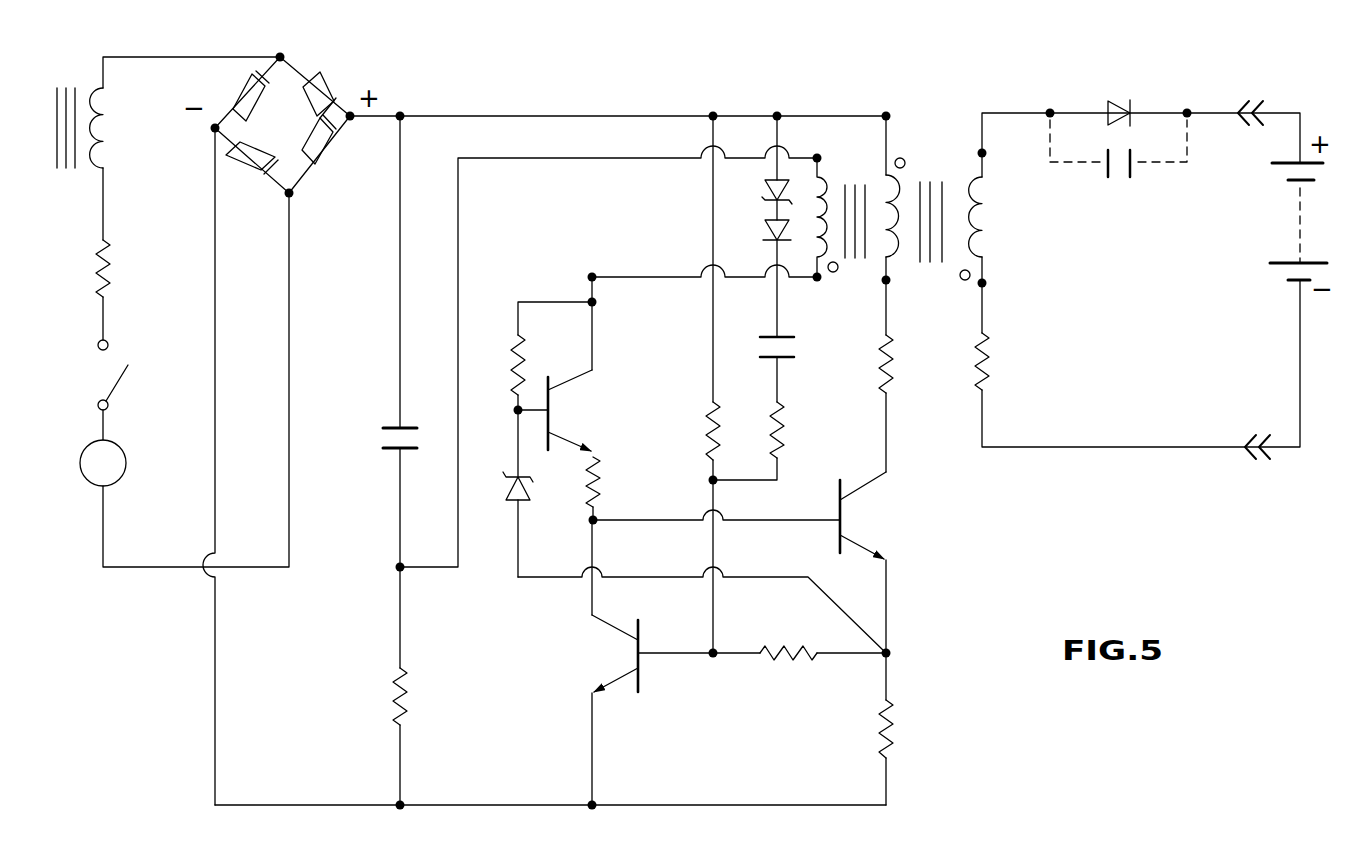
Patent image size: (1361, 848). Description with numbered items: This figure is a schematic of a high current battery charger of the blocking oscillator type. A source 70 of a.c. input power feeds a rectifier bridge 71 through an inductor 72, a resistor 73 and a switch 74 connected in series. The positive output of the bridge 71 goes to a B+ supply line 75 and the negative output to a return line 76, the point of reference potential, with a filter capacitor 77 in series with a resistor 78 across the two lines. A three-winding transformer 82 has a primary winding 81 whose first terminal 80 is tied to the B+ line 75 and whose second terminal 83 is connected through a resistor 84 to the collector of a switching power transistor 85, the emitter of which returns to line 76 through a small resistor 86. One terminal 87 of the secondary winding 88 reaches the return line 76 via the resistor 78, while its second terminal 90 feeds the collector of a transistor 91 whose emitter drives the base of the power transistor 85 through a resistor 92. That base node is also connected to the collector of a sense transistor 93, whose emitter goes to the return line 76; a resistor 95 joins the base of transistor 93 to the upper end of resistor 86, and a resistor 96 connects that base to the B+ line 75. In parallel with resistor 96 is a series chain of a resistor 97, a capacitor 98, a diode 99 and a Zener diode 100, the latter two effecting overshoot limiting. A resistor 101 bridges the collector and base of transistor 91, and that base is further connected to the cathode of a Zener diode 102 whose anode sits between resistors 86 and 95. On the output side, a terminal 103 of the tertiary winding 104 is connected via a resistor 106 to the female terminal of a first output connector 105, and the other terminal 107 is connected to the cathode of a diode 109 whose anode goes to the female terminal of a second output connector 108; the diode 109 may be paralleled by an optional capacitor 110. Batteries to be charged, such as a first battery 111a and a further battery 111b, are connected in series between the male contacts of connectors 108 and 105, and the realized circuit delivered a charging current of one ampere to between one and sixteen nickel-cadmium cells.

The source of input power 70 is at (117, 443).
The rectifier bridge 71 is at (340, 60).
The inductor 72 is at (107, 117).
The resistor 73 is at (98, 247).
The switch 74 is at (122, 382).
The B+ supply line 75 is at (543, 115).
The return line 76 is at (315, 803).
The filter capacitor 77 is at (380, 435).
The resistor 78 is at (393, 685).
The first terminal 80 is at (886, 110).
The primary winding 81 is at (898, 185).
The three-winding transformer 82 is at (786, 138).
The second terminal 83 is at (886, 280).
The resistor 84 is at (890, 350).
The switching power transistor 85 is at (908, 505).
The resistor 86 is at (892, 710).
The terminal 87 is at (822, 153).
The secondary winding 88 is at (857, 192).
The second terminal 90 is at (817, 280).
The transistor 91 is at (598, 395).
The resistor 92 is at (597, 490).
The sense transistor 93 is at (605, 657).
The resistor 95 is at (790, 660).
The resistor 96 is at (705, 420).
The resistor 97 is at (778, 413).
The capacitor 98 is at (787, 343).
The diode 99 is at (768, 227).
The Zener diode 100 is at (758, 187).
The resistor 101 is at (510, 352).
The Zener diode 102 is at (507, 497).
The terminal 103 is at (982, 283).
The tertiary winding 104 is at (992, 246).
The first output connector 105 is at (1253, 458).
The resistor 106 is at (990, 360).
The second terminal 107 is at (982, 153).
The second output connector 108 is at (1255, 100).
The diode 109 is at (1120, 100).
The capacitor 110 is at (1132, 173).
The first battery 111a is at (1278, 173).
The battery 111b is at (1278, 273).